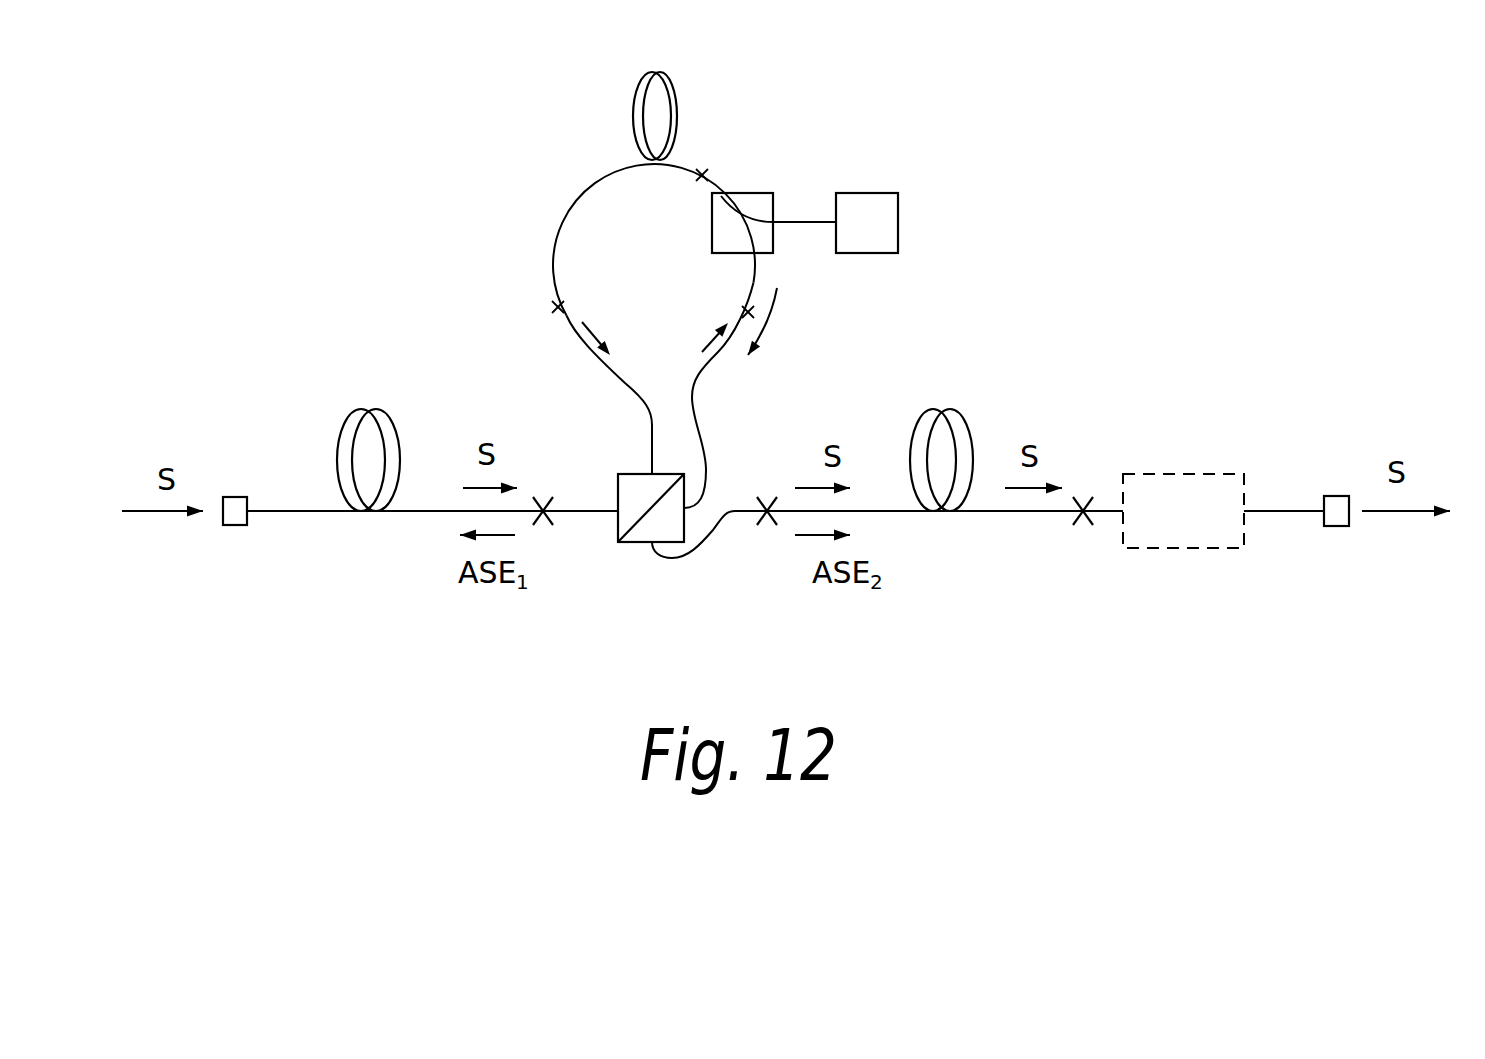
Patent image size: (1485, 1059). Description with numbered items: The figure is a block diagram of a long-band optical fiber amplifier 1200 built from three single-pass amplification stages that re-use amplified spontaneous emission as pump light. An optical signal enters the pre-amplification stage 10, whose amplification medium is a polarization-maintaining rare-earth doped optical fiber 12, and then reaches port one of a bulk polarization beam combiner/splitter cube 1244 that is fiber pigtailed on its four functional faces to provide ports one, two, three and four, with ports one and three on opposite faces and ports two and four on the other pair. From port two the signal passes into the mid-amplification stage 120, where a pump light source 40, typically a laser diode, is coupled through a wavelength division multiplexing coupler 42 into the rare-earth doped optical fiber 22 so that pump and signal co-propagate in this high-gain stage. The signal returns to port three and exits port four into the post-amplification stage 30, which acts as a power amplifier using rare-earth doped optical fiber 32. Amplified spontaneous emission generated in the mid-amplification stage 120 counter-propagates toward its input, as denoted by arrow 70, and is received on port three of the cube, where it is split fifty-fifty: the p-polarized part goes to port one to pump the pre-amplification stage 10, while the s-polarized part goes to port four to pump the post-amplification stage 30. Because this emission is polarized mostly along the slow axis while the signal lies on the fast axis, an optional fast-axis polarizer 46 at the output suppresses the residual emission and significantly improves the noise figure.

The pre-amplification stage 10 is at (375, 426).
The rare-earth doped optical fiber 12 is at (390, 420).
The rare-earth doped optical fiber 22 is at (677, 118).
The post-amplification stage 30 is at (956, 434).
The rare-earth doped optical fiber 32 is at (913, 428).
The pump light source 40 is at (880, 193).
The wavelength division multiplexing coupler 42 is at (763, 193).
The polarizer 46 is at (1183, 473).
The arrow 70 is at (767, 325).
The mid-amplification stage 120 is at (757, 280).
The long-band optical fiber amplifier 1200 is at (1170, 287).
The polarization beam combiner/splitter cube 1244 is at (628, 542).